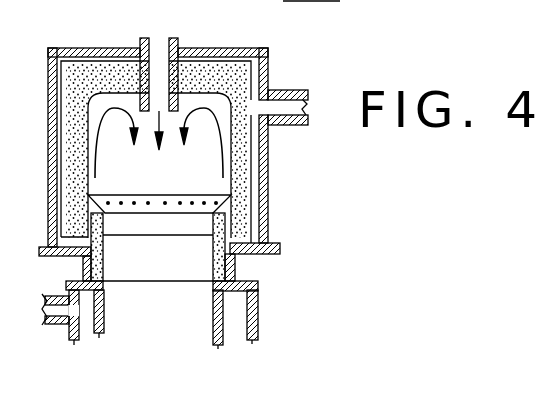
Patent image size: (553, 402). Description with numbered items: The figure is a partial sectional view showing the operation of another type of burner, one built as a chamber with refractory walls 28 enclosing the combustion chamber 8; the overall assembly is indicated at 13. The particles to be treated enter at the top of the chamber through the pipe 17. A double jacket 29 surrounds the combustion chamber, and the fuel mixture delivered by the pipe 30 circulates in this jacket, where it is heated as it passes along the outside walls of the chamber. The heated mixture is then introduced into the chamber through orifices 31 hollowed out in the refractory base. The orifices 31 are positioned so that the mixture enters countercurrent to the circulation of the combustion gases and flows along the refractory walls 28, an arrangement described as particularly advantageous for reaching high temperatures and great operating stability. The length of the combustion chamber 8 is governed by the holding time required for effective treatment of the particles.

The combustion chamber 8 is at (168, 185).
The reactor assembly 13 is at (311, 14).
The pipe 17 is at (140, 42).
The refractory walls 28 is at (249, 149).
The double jacket 29 is at (268, 207).
The pipe 30 is at (290, 90).
The orifices 31 is at (135, 200).